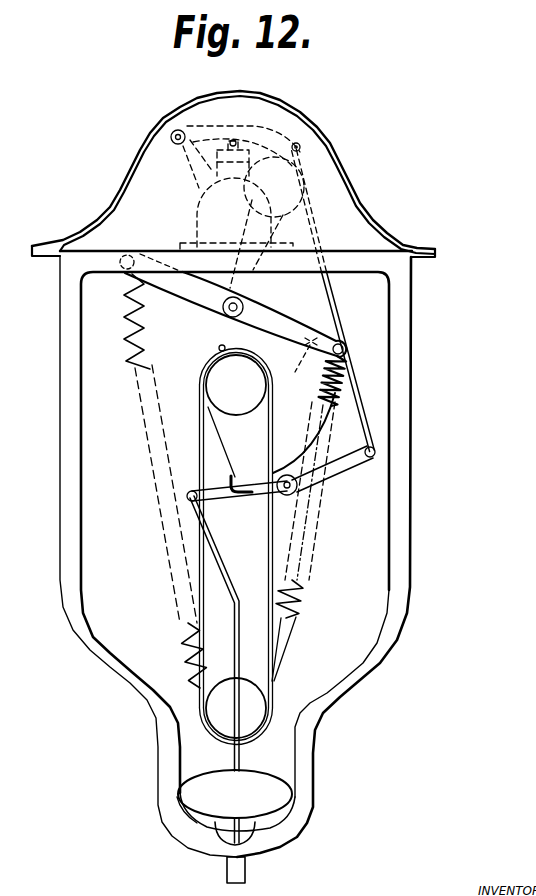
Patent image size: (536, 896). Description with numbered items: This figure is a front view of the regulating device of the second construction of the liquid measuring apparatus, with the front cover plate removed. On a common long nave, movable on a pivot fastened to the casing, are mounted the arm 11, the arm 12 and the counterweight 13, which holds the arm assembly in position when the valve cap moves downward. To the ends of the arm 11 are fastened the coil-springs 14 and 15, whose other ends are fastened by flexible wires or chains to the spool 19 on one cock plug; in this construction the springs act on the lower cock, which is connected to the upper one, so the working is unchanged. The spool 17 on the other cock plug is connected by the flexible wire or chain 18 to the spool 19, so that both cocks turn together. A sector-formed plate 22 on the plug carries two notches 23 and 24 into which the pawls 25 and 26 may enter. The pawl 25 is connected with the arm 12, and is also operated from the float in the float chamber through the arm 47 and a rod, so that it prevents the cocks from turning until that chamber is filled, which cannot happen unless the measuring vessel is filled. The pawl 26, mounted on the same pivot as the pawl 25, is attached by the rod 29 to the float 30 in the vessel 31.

The arm 47 is at (262, 128).
The counterweight 13 is at (313, 186).
The arm 11 is at (278, 318).
The arm 12 is at (334, 307).
The coil-spring 14 is at (133, 338).
The spool 17 is at (232, 372).
The notch 24 is at (304, 405).
The coil-spring 15 is at (341, 393).
The sector-formed plate 22 is at (230, 423).
The notch 23 is at (255, 450).
The pawl 25 is at (293, 498).
The pawl 26 is at (226, 497).
The flexible wire or chain 18 is at (268, 545).
The rod 29 is at (262, 566).
The spool 19 is at (250, 707).
The vessel 31 is at (290, 772).
The float 30 is at (235, 807).